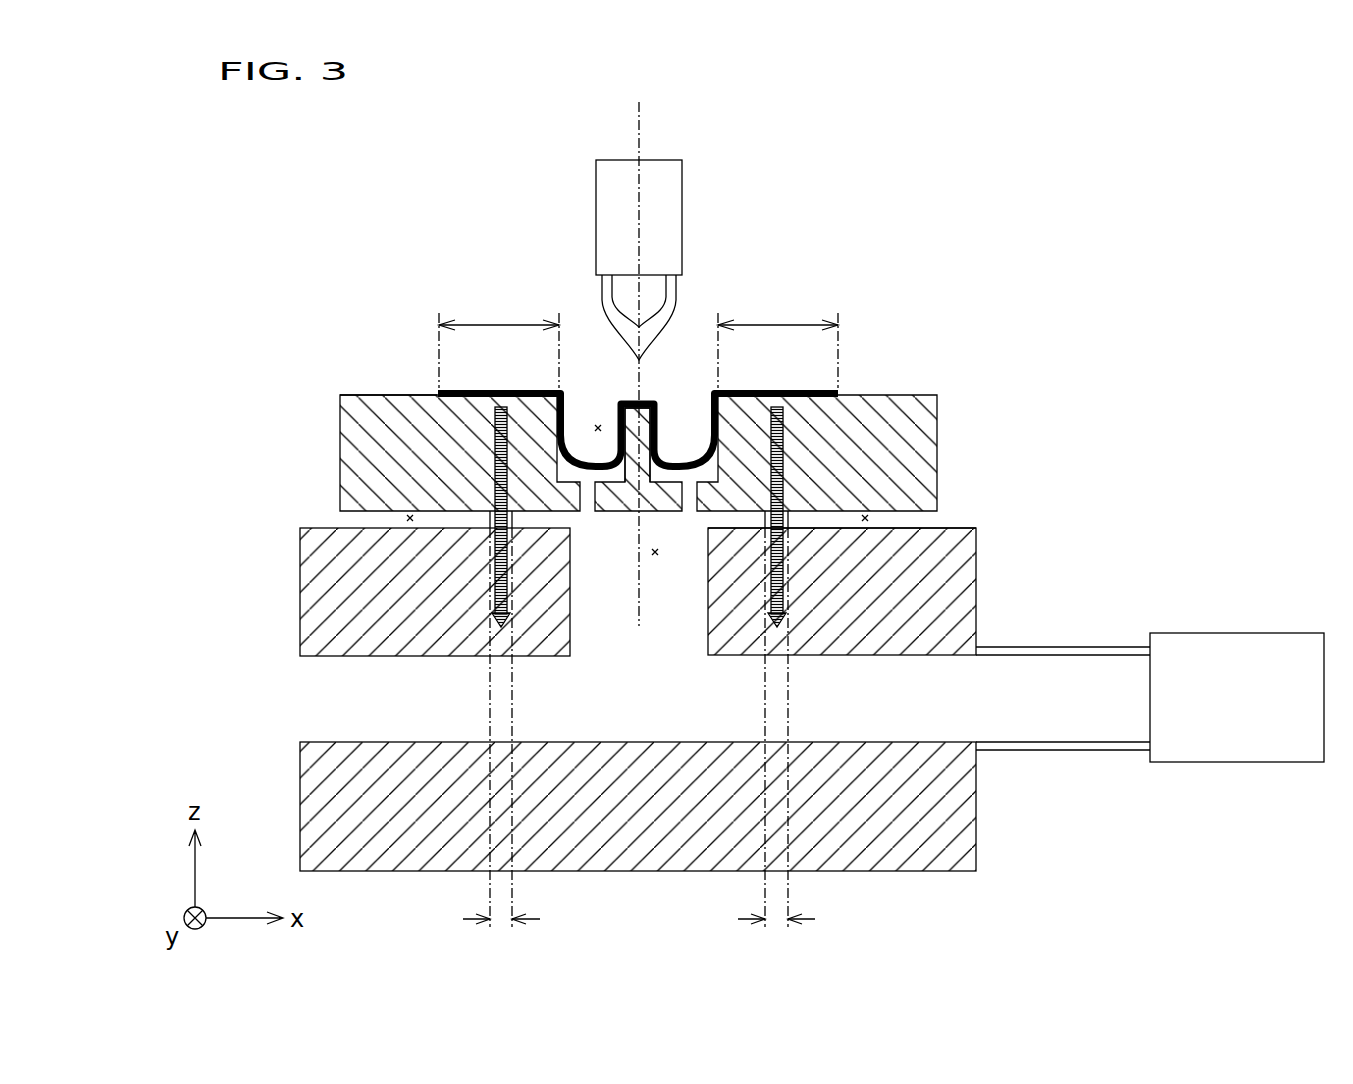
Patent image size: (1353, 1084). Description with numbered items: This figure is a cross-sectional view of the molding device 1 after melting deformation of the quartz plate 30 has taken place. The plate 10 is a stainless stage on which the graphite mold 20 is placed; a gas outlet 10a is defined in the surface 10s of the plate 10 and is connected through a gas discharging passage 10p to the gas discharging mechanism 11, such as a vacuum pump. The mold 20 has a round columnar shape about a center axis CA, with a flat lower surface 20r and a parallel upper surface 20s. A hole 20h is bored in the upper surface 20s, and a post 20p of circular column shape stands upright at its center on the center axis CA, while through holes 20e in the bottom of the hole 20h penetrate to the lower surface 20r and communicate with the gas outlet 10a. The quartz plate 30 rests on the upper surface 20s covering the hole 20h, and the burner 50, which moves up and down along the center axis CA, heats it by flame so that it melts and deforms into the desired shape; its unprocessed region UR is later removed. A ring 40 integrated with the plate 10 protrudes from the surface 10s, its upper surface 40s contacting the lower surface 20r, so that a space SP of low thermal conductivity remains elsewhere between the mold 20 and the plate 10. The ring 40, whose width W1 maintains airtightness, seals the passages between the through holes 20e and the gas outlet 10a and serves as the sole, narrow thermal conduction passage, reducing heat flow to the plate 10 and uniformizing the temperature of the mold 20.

The molding device 1 is at (965, 101).
The plate 10 is at (950, 573).
The gas outlet 10a is at (658, 553).
The gas discharging passage 10p is at (947, 745).
The surface of the plate 10s is at (915, 528).
The gas discharging mechanism 11 is at (1287, 651).
The mold 20 is at (910, 418).
The through holes 20e is at (578, 496).
The hole 20h is at (598, 426).
The post 20p is at (630, 400).
The lower surface 20r is at (360, 513).
The upper surface 20s is at (373, 393).
The quartz plate 30 is at (467, 402).
The ring 40 is at (494, 560).
The upper surface of the ring 40s is at (494, 506).
The burner 50 is at (606, 190).
The center axis CA is at (636, 113).
The space SP is at (410, 516).
The unprocessed region UR is at (638, 339).
The width of the ring W1 is at (634, 743).